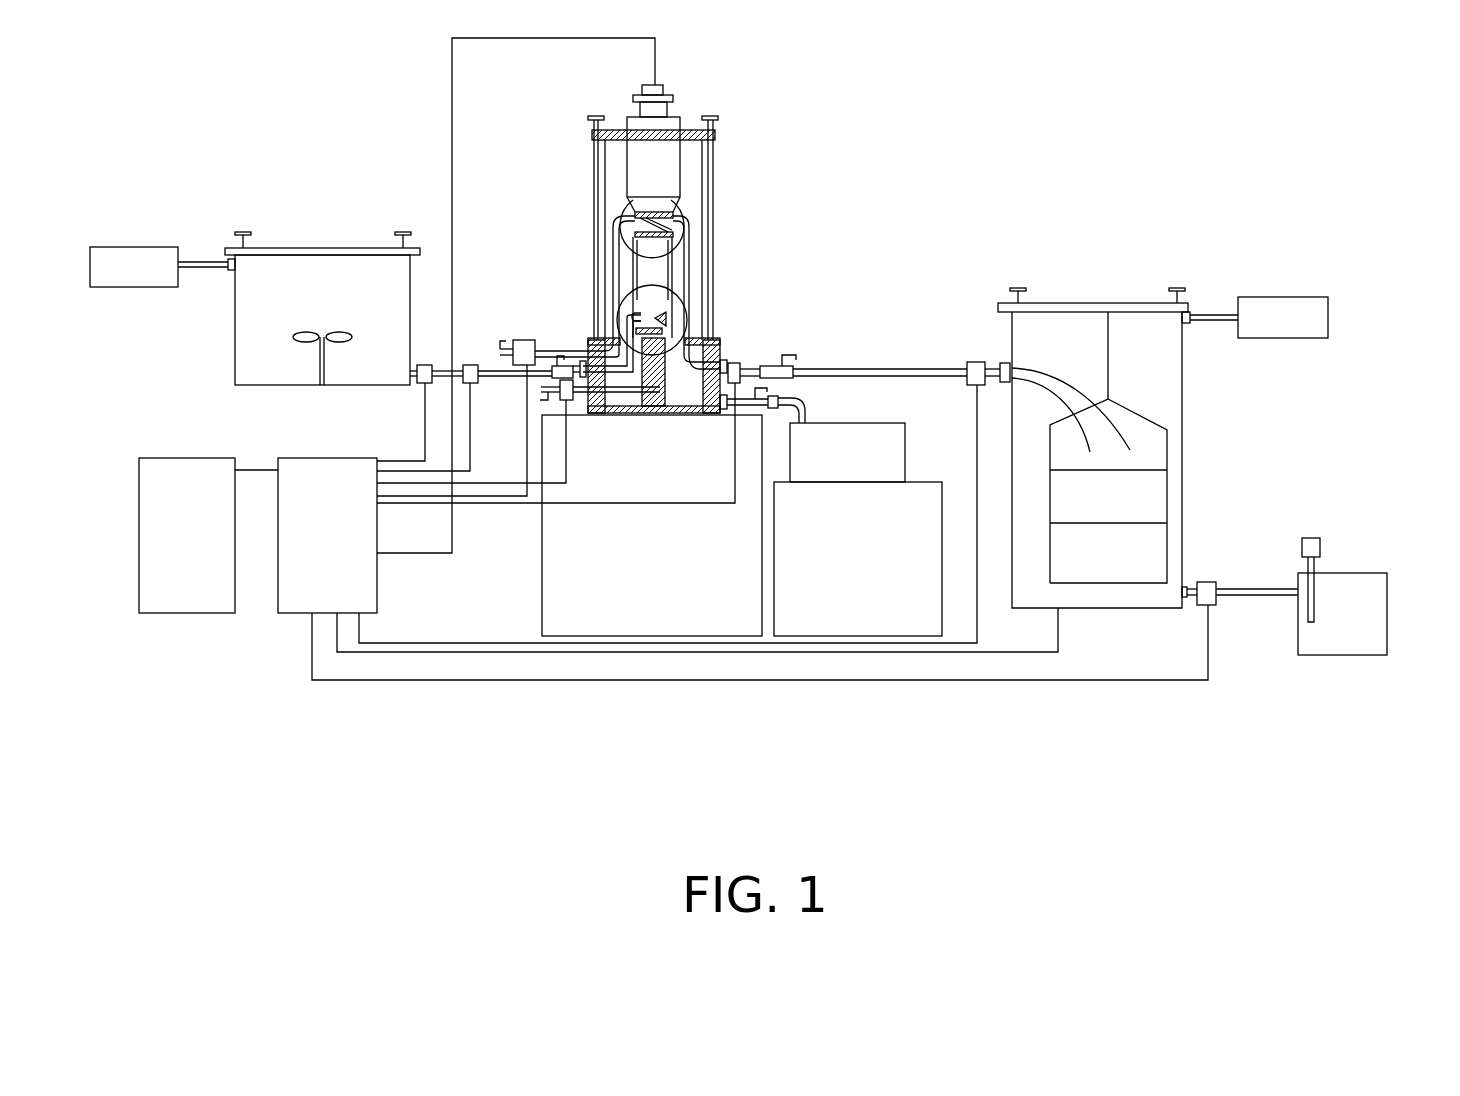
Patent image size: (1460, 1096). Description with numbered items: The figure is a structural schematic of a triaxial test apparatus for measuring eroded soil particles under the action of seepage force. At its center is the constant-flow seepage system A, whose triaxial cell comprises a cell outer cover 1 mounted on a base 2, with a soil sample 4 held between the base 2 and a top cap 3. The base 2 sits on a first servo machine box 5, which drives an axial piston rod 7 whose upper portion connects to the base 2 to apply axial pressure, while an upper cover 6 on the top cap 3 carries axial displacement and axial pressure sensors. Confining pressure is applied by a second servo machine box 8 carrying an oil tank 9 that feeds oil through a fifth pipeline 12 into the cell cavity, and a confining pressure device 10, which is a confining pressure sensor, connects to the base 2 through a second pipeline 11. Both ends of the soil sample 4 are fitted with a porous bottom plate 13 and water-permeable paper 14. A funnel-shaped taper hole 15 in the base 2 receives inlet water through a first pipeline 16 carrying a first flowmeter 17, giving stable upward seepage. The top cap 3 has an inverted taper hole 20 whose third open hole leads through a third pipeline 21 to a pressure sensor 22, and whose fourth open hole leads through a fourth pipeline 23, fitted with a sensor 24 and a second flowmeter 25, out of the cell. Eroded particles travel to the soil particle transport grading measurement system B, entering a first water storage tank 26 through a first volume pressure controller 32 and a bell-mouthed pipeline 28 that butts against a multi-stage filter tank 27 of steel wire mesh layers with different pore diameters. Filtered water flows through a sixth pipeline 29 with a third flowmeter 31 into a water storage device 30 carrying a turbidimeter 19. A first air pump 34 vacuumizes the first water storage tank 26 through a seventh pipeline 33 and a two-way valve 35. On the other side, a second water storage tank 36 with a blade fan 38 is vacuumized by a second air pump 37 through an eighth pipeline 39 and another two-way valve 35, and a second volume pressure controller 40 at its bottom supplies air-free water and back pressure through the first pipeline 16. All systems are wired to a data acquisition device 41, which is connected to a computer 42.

The cell outer cover 1 is at (702, 178).
The base 2 is at (636, 315).
The top cap 3 is at (638, 214).
The soil sample 4 is at (617, 237).
The first servo machine box 5 is at (640, 598).
The upper cover 6 is at (648, 165).
The axial piston rod 7 is at (660, 392).
The second servo machine box 8 is at (914, 605).
The oil tank 9 is at (852, 477).
The confining pressure device 10 is at (569, 392).
The second pipeline 11 is at (617, 392).
The fifth pipeline 12 is at (777, 406).
The porous bottom plate 13 is at (672, 220).
The water-permeable paper 14 is at (667, 232).
The taper hole 15 is at (660, 320).
The first pipeline 16 is at (622, 368).
The first flowmeter 17 is at (472, 384).
The turbidimeter 19 is at (1312, 548).
The inverted taper hole 20 is at (672, 213).
The third pipeline 21 is at (615, 270).
The pressure sensor 22 is at (520, 338).
The fourth pipeline 23 is at (687, 263).
The sensor 24 is at (737, 372).
The second flowmeter 25 is at (972, 366).
The first water storage tank 26 is at (1180, 412).
The multi-stage filter tank 27 is at (1155, 507).
The bell-mouthed pipeline 28 is at (1063, 390).
The sixth pipeline 29 is at (1248, 590).
The water storage device 30 is at (1375, 623).
The third flowmeter 31 is at (1207, 590).
The first volume pressure controller 32 is at (1005, 366).
The seventh pipeline 33 is at (1218, 316).
The first air pump 34 is at (1305, 313).
The two-way valve 35 is at (232, 262).
The second water storage tank 36 is at (305, 273).
The second air pump 37 is at (123, 252).
The blade fan 38 is at (300, 338).
The eighth pipeline 39 is at (193, 262).
The second volume pressure controller 40 is at (422, 384).
The data acquisition device 41 is at (307, 583).
The computer 42 is at (190, 587).
The constant-flow seepage system A is at (632, 345).
The soil particle transport grading measurement system B is at (628, 220).